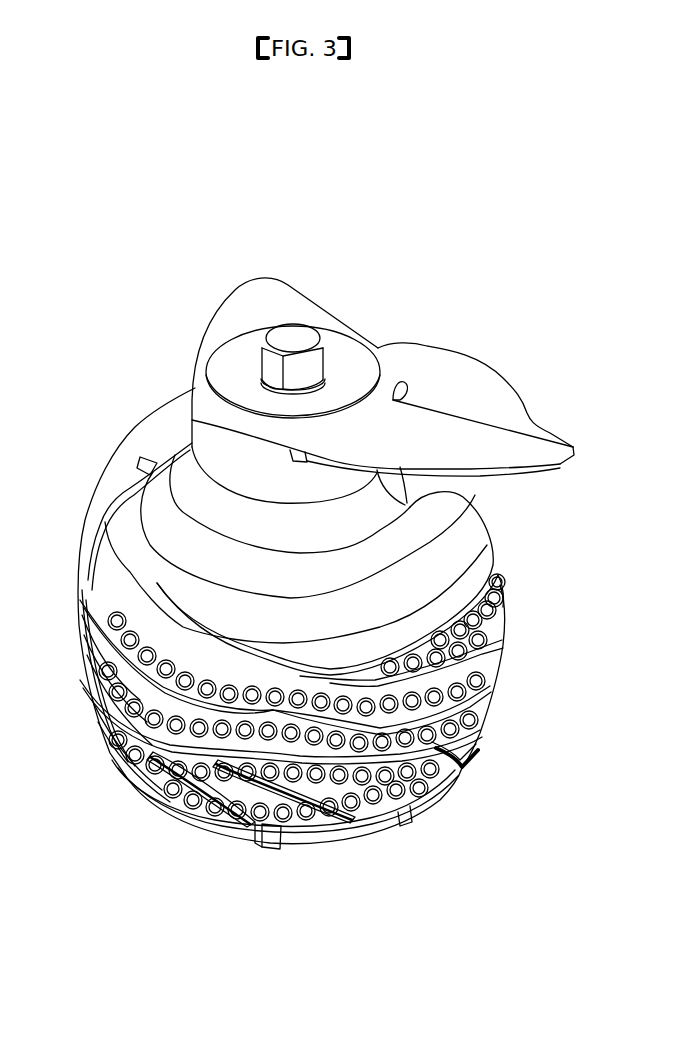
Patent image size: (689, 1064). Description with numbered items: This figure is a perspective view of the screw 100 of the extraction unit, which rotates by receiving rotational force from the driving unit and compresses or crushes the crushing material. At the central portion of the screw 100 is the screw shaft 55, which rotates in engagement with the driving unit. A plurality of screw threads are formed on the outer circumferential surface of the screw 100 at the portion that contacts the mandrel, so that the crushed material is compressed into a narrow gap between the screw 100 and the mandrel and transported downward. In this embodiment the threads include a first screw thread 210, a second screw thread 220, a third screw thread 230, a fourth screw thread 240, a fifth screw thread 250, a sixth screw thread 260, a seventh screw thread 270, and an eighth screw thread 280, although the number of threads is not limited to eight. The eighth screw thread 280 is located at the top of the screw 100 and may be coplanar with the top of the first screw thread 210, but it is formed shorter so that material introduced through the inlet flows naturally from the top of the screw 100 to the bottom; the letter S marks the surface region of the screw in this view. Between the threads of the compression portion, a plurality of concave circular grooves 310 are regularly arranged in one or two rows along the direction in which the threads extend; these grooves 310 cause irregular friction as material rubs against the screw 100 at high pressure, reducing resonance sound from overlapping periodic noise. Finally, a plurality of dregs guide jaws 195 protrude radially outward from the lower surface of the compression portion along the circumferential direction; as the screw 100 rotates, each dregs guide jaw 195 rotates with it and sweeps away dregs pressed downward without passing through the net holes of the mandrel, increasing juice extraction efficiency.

The screw 100 is at (392, 161).
The eighth screw thread 280 is at (243, 302).
The screw shaft 55 is at (303, 337).
The screw blade S is at (493, 360).
The fifth screw thread 250 is at (503, 607).
The sixth screw thread 260 is at (502, 650).
The seventh screw thread 270 is at (490, 693).
The grooves (embossing) 310 is at (478, 732).
The fourth screw thread 240 is at (110, 745).
The third screw thread 230 is at (190, 800).
The second screw thread 220 is at (332, 812).
The first screw thread 210 is at (455, 770).
The dregs guide jaw 195 is at (263, 840).